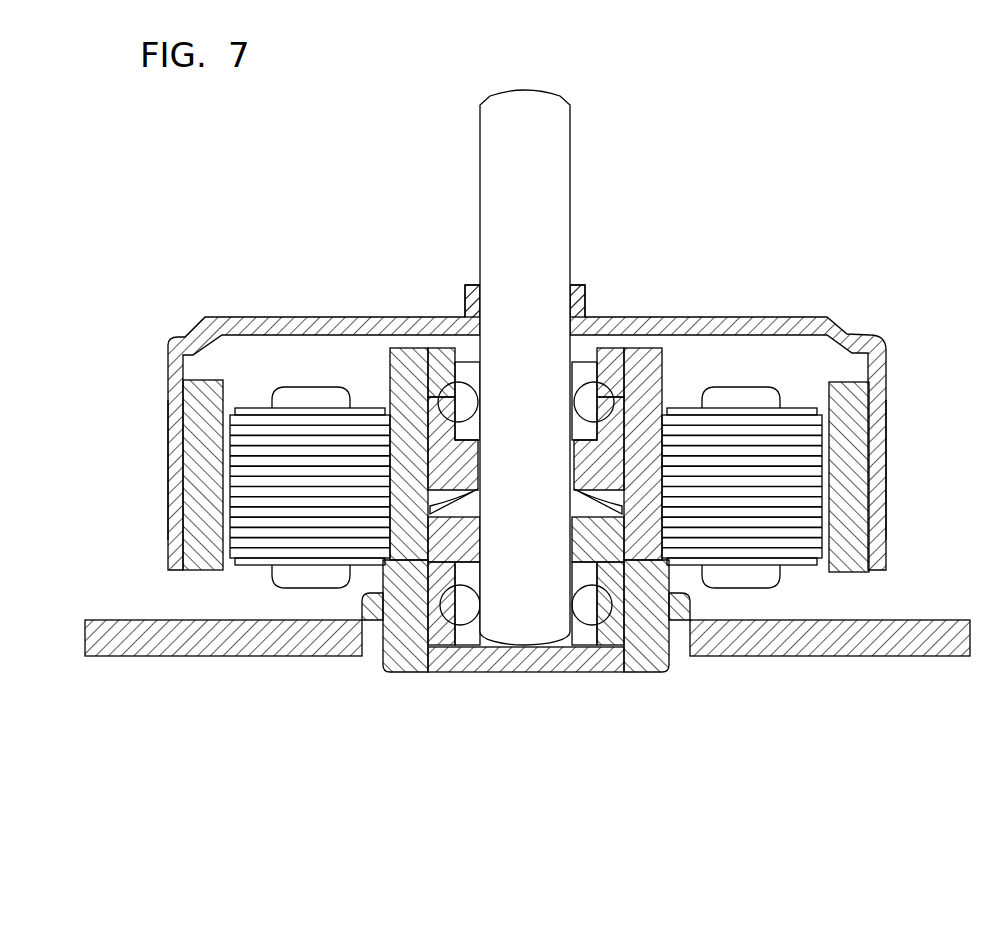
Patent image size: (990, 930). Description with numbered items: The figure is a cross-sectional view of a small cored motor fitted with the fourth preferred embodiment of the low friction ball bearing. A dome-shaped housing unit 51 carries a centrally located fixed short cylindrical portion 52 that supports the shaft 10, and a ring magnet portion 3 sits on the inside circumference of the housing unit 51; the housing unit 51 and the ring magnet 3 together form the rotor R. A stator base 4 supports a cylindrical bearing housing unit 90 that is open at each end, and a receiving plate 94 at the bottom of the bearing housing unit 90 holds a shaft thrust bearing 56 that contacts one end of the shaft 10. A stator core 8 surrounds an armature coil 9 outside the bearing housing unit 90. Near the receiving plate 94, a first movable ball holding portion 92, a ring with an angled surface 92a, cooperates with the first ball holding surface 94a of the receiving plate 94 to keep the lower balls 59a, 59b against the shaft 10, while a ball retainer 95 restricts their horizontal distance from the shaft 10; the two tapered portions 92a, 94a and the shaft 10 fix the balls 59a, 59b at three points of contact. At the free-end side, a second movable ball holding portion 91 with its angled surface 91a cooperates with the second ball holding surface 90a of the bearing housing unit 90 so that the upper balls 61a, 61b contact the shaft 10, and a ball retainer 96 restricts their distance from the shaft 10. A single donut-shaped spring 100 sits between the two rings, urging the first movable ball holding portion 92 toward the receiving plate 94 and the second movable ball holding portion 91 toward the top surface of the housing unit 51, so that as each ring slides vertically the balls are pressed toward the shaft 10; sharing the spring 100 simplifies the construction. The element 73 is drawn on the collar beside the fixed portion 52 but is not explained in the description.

The shaft 10 is at (530, 127).
The housing unit 51 is at (820, 318).
The fixed short cylindrical portion 52 is at (582, 305).
The collar lip 73 is at (463, 350).
The rotor R is at (895, 336).
The ring magnet portion 3 is at (190, 447).
The stator core 8 is at (258, 442).
The armature coil 9 is at (303, 397).
The cylindrical bearing housing unit 90 is at (657, 584).
The second ball holding surface 90a is at (437, 374).
The second movable ball holding portion 91 is at (437, 460).
The angled surface 91a is at (613, 413).
The ball 61b is at (452, 405).
The ball 61a is at (598, 398).
The ball retainer 96 is at (582, 370).
The donut-shaped spring 100 is at (608, 502).
The angled surface 92a is at (456, 585).
The ball retainer 95 is at (473, 578).
The ball 59b is at (462, 612).
The ball 59a is at (592, 612).
The first ball holding surface 94a is at (443, 620).
The receiving plate 94 is at (438, 658).
The first movable ball holding portion 92 is at (600, 550).
The shaft thrust bearing 56 is at (513, 657).
The stator base 4 is at (930, 652).